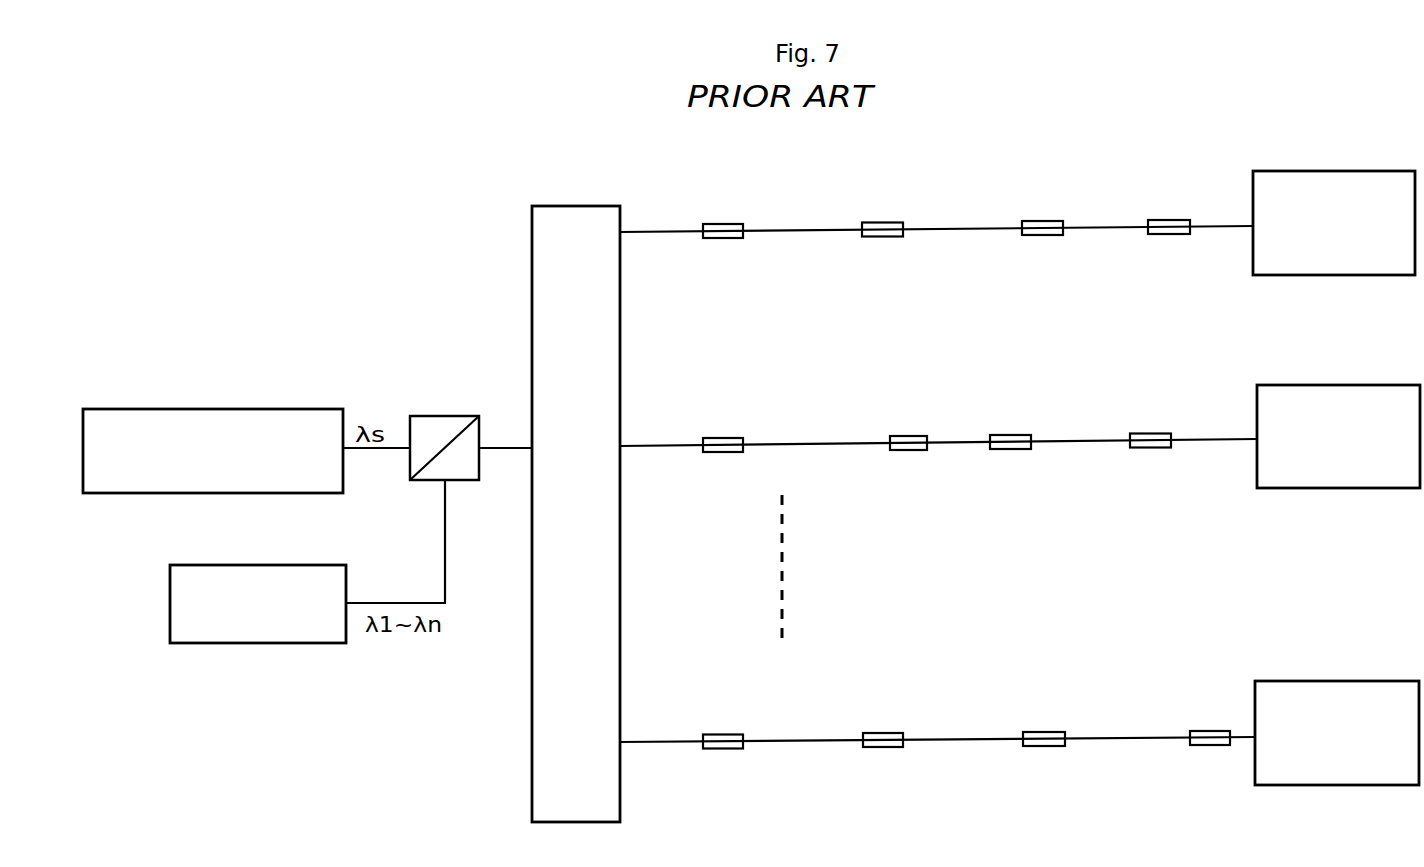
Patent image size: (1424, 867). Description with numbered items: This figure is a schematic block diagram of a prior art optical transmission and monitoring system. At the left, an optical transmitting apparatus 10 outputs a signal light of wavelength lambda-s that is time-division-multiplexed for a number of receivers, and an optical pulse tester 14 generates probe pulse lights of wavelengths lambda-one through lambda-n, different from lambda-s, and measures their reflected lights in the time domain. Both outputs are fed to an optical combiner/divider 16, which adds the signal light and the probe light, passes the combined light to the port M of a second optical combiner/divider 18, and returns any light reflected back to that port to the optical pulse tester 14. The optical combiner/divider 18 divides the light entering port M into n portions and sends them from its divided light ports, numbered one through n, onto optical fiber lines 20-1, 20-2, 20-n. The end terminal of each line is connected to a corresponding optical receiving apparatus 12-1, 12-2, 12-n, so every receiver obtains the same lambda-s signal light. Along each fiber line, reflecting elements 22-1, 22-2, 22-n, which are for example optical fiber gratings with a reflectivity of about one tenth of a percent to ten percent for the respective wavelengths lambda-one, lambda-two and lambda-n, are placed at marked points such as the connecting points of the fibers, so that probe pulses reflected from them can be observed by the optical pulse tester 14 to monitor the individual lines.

The optical transmitting apparatus 10 is at (238, 410).
The optical receiving apparatus 12-1 is at (1331, 180).
The optical receiving apparatus 12-2 is at (1338, 392).
The optical receiving apparatus 12-n is at (1365, 686).
The optical pulse tester 14 is at (268, 637).
The optical combiner/divider 16 is at (443, 430).
The optical combiner/divider 18 is at (569, 222).
The optical fiber line 20-1 is at (970, 222).
The optical fiber line 20-2 is at (960, 440).
The optical fiber line 20-n is at (958, 738).
The reflecting element 22-1 is at (720, 224).
The reflecting element 22-2 is at (718, 438).
The reflecting element 22-n is at (720, 734).